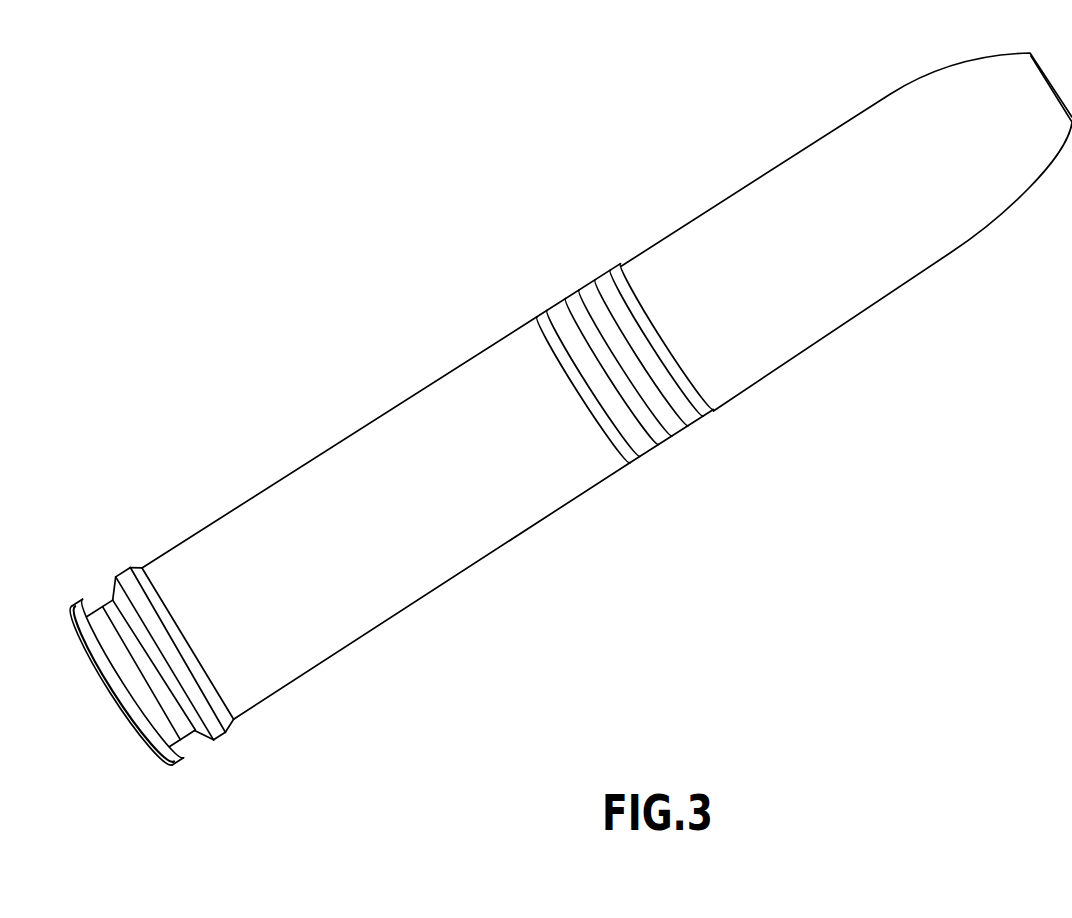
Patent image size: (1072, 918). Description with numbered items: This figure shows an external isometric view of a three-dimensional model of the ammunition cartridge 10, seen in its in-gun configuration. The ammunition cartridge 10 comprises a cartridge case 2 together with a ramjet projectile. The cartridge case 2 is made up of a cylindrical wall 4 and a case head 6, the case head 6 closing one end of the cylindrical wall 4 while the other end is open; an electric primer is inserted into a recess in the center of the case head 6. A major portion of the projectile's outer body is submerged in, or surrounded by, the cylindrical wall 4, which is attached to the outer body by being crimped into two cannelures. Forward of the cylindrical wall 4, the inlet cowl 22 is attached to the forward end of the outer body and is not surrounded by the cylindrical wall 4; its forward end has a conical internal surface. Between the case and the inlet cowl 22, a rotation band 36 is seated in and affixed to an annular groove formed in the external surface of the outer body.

The ammunition cartridge 10 is at (227, 432).
The cartridge case 2 is at (371, 421).
The cylindrical wall 4 is at (300, 655).
The case head 6 is at (175, 730).
The inlet cowl 22 is at (864, 287).
The rotation band 36 is at (705, 422).